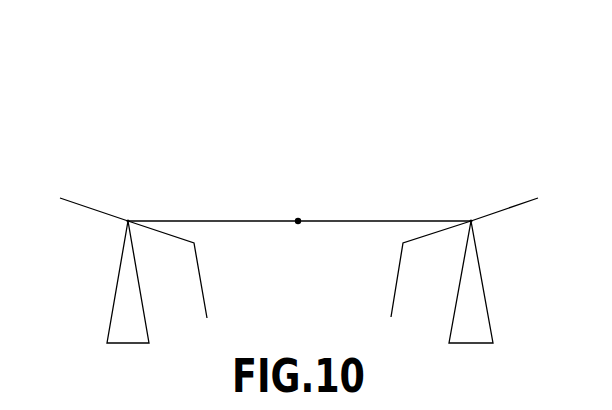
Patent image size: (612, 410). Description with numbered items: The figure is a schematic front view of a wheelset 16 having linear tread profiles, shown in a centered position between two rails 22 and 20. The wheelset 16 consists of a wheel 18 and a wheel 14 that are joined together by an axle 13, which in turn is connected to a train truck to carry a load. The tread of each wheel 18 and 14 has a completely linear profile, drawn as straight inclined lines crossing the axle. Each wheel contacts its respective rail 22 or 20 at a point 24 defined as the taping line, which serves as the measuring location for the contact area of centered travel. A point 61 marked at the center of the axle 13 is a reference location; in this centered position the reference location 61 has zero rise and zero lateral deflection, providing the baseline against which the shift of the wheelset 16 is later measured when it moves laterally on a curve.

The wheelset 16 is at (322, 98).
The axle 13 is at (363, 222).
The reference location 61 is at (298, 218).
The wheel 18 is at (78, 202).
The wheel 14 is at (522, 200).
The rail 22 is at (113, 293).
The rail 20 is at (483, 298).
The taping line 24 is at (128, 218).